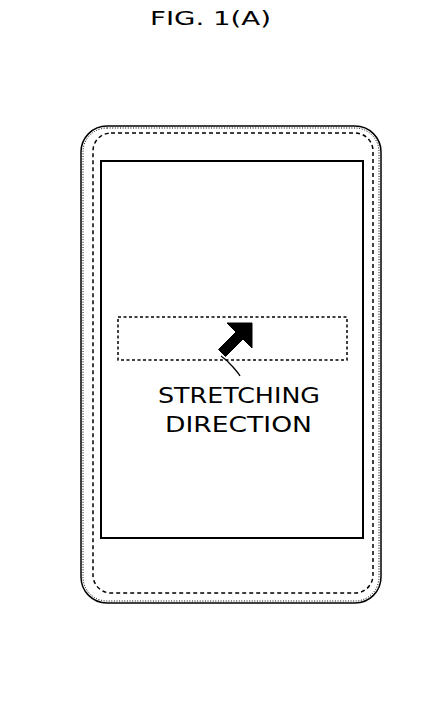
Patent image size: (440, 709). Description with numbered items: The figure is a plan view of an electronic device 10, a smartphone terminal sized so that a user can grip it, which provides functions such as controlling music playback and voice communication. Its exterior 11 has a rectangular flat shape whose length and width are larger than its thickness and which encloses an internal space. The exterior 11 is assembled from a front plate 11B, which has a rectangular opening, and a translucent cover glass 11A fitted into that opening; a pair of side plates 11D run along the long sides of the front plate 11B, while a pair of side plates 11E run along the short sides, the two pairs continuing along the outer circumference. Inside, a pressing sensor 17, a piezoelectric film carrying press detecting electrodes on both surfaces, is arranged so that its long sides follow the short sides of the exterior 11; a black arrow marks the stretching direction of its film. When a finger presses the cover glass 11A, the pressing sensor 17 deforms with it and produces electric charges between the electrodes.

The electronic device 10 is at (92, 113).
The exterior 11 is at (363, 133).
The cover glass 11A is at (98, 153).
The front plate 11B is at (345, 578).
The side plates 11D is at (83, 332).
The side plates 11E is at (255, 134).
The pressing sensor 17 is at (138, 316).